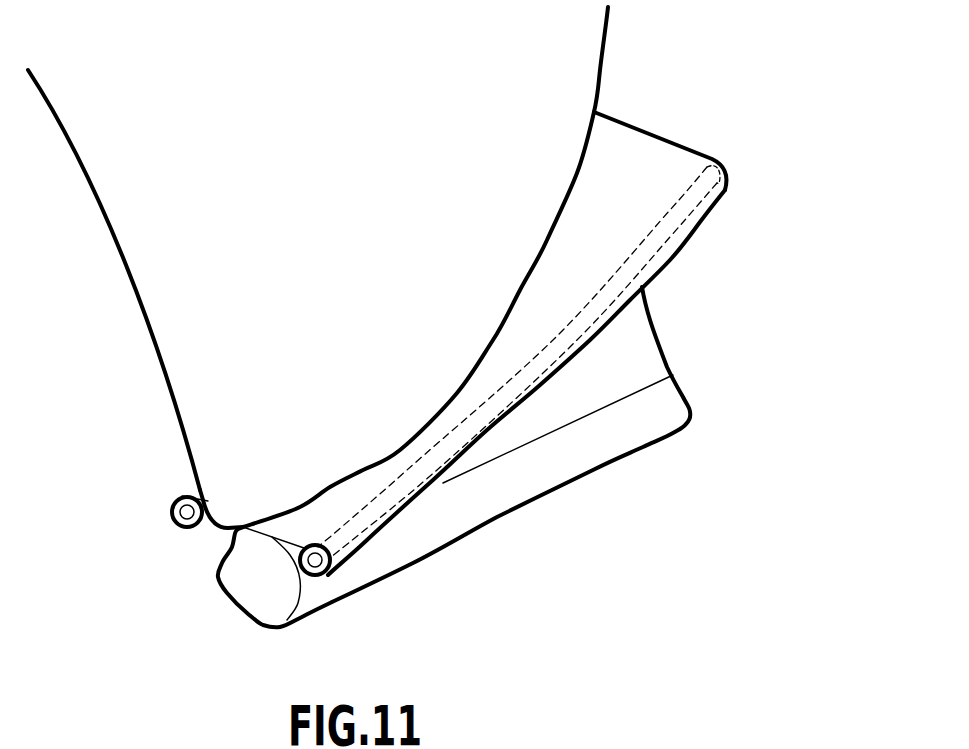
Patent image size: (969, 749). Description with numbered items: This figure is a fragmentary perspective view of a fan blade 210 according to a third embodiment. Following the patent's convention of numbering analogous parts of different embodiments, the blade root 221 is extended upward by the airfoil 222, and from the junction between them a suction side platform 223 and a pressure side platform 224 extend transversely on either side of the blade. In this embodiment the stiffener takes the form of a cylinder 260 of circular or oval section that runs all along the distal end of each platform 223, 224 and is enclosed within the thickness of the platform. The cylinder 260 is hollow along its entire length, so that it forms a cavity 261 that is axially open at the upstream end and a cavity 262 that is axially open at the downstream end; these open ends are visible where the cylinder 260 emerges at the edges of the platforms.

The blade 210 is at (745, 60).
The blade root 221 is at (252, 593).
The airfoil 222 is at (150, 213).
The suction side platform 223 is at (642, 147).
The pressure side platform 224 is at (197, 482).
The cylinder 260 is at (180, 532).
The cavity 261 is at (185, 511).
The cavity 262 is at (720, 157).